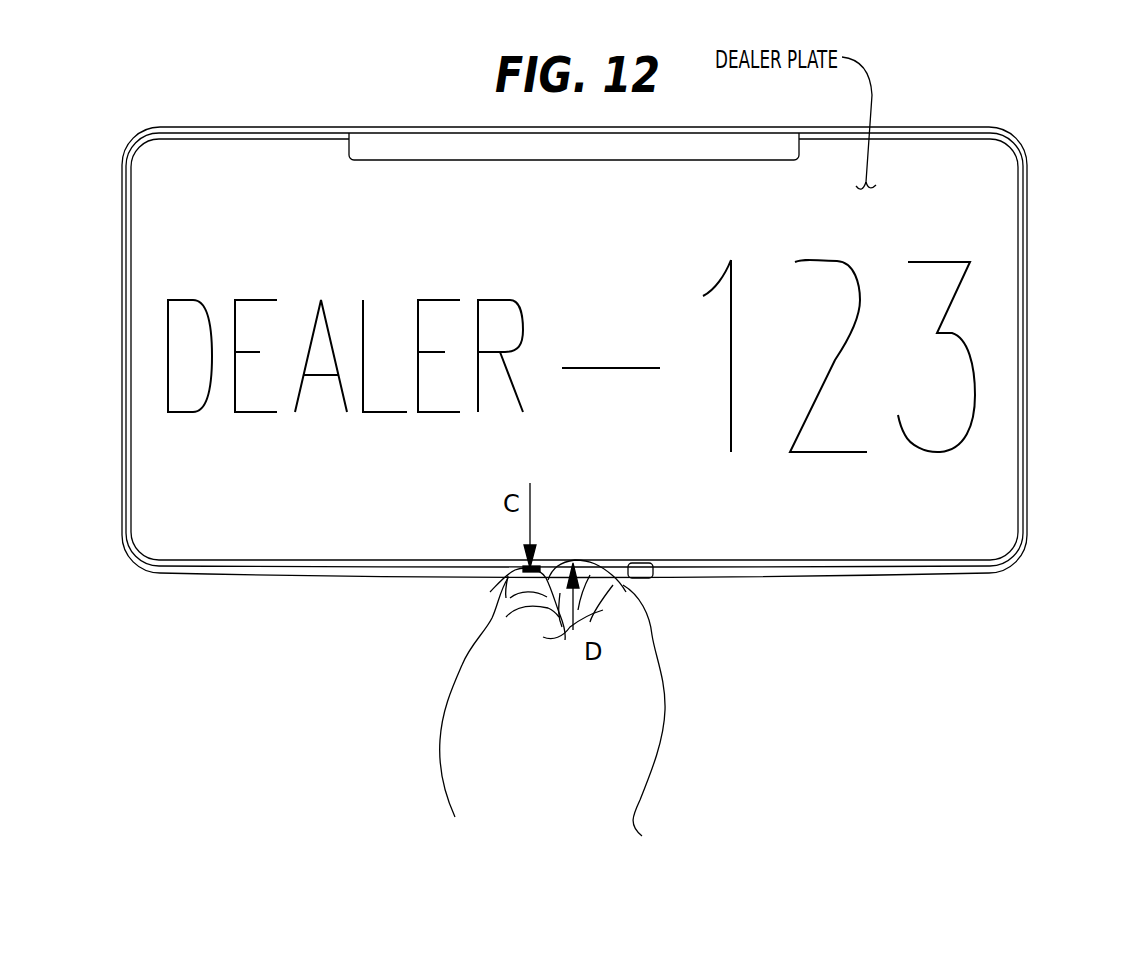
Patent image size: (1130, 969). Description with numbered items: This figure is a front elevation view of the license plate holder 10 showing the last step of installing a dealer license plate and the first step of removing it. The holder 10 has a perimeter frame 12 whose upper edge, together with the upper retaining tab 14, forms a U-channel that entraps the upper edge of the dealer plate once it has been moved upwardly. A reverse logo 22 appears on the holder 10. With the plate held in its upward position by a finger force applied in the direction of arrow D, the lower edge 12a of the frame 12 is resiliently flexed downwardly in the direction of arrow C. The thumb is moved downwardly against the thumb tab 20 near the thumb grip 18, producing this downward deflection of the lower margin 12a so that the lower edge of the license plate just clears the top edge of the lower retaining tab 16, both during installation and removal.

The license plate holder 10 is at (913, 126).
The perimeter frame 12 is at (1027, 197).
The lower edge of the frame 12a is at (708, 578).
The upper retaining tab 14 is at (708, 149).
The lower retaining tab 16 is at (641, 562).
The thumb grip 18 is at (538, 565).
The thumb tab 20 is at (508, 580).
The reverse logo 22 is at (562, 152).